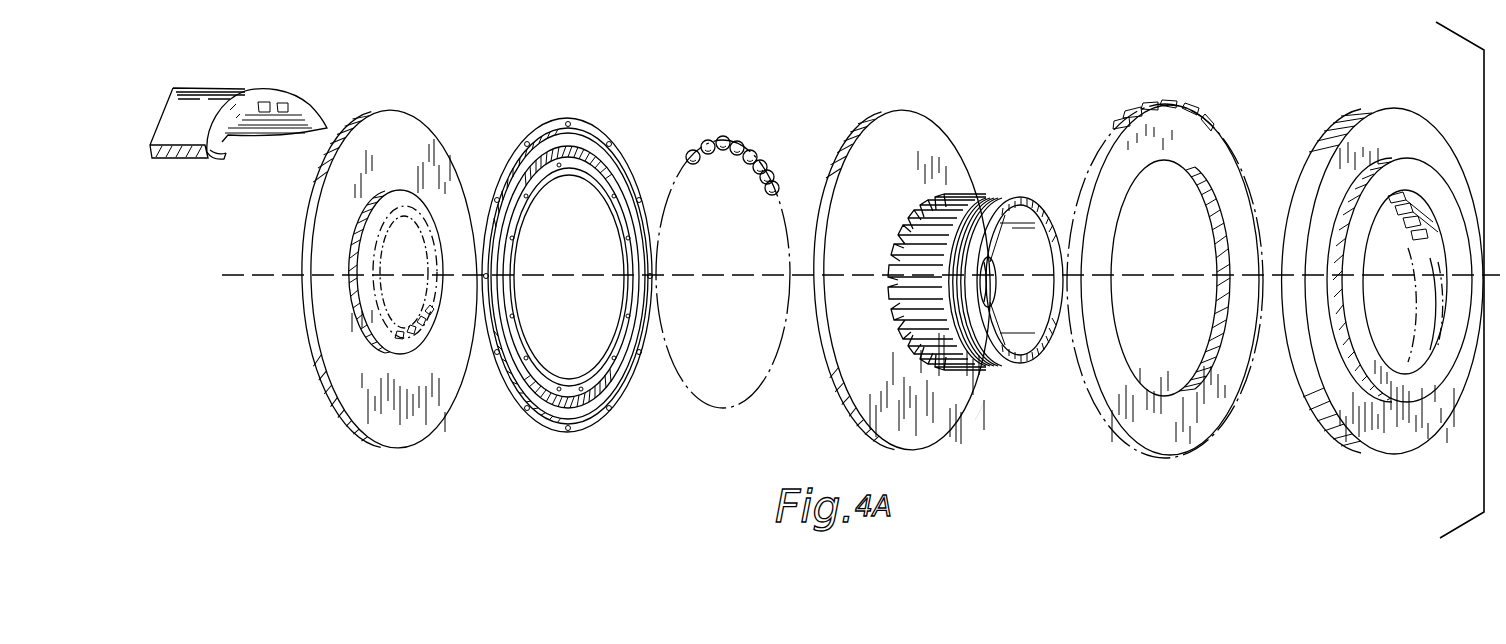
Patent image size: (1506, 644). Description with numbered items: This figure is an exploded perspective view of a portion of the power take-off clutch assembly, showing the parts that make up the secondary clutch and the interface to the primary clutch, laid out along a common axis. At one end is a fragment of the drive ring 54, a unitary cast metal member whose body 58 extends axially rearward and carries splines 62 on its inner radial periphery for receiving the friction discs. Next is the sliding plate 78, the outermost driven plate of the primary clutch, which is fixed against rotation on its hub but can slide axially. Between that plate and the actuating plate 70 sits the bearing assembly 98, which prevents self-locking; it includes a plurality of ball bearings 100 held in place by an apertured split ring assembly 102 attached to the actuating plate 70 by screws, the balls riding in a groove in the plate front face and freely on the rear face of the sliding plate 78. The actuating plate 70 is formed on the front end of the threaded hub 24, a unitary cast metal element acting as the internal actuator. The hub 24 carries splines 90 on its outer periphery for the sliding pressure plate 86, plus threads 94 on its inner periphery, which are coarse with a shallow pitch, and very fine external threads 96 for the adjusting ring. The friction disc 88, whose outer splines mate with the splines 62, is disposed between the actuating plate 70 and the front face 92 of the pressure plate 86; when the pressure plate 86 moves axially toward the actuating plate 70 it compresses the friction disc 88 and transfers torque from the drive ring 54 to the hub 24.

The threaded hub 24 is at (977, 407).
The drive ring 54 is at (297, 92).
The body 58 is at (208, 88).
The splines 62 is at (224, 142).
The actuating plate 70 is at (917, 125).
The sliding plate 78 is at (421, 130).
The pressure plate 86 is at (1408, 122).
The friction disc 88 is at (1222, 150).
The splines 90 is at (962, 195).
The front face 92 is at (1332, 125).
The threads 94 is at (1016, 224).
The threads 96 is at (992, 200).
The bearing assembly 98 is at (641, 150).
The ball bearings 100 is at (742, 144).
The apertured split ring assembly 102 is at (576, 118).